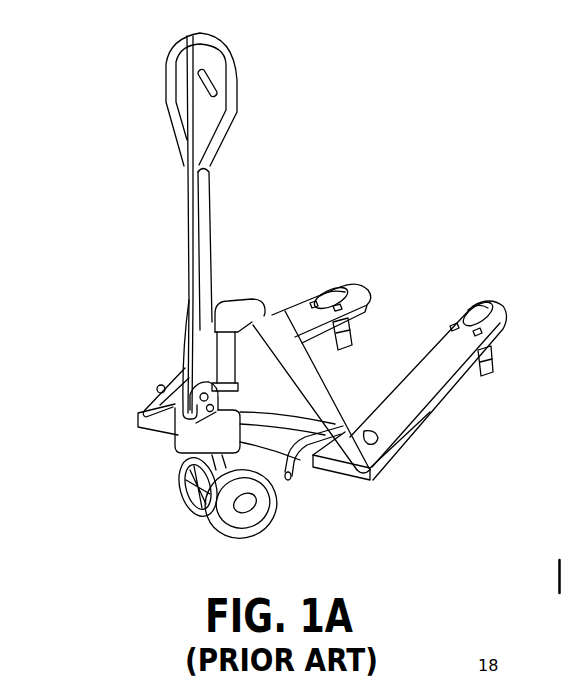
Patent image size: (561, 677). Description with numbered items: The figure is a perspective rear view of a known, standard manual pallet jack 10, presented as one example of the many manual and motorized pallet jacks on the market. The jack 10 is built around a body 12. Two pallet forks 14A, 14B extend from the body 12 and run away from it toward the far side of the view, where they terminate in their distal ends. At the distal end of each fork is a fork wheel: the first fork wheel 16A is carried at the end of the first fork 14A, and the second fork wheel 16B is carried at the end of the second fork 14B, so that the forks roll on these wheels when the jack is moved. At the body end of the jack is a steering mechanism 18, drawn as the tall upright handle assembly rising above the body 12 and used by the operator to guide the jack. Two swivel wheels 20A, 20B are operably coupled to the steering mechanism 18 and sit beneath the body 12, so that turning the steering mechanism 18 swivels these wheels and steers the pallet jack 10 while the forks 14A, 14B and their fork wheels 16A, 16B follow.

The pallet jack 10 is at (86, 72).
The body 12 is at (342, 412).
The pallet fork 14A is at (291, 311).
The pallet fork 14B is at (421, 347).
The fork wheel 16A is at (338, 347).
The fork wheel 16B is at (482, 375).
The steering mechanism 18 is at (142, 230).
The swivel wheel 20A is at (183, 475).
The swivel wheel 20B is at (270, 497).